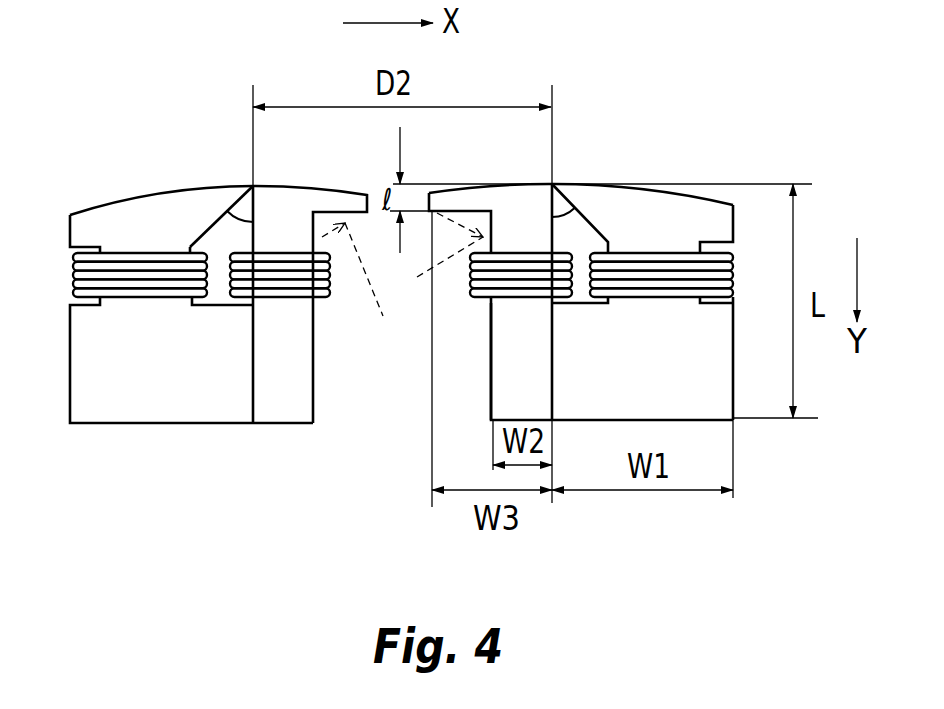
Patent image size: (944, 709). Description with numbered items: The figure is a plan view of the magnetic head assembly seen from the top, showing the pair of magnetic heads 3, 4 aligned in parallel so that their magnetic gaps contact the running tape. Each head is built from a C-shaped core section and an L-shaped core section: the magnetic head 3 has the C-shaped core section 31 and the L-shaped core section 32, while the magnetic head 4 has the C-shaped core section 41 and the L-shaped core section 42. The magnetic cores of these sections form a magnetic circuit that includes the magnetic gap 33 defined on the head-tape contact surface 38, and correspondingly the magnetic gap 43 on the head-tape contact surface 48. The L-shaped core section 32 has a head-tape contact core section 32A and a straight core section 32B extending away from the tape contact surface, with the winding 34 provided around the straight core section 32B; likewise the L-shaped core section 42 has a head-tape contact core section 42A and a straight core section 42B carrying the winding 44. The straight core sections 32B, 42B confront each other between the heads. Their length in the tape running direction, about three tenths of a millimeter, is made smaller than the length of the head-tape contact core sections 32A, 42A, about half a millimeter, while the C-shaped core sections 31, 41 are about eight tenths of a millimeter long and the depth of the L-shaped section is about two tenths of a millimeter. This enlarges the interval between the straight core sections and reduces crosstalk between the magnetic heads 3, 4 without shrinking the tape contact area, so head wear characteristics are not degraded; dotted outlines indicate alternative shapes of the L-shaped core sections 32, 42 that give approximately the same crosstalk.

The magnetic head 3 is at (678, 92).
The magnetic head 4 is at (153, 97).
The C-shaped core section 31 is at (716, 386).
The L-shaped core section 32 is at (523, 362).
The head-tape contact core section 32A is at (504, 195).
The straight core section 32B is at (428, 361).
The magnetic gap 33 is at (553, 183).
The winding 34 is at (440, 282).
The head-tape contact surface 38 is at (692, 194).
The C-shaped core section 41 is at (135, 406).
The L-shaped core section 42 is at (279, 405).
The head-tape contact core section 42A is at (291, 198).
The straight core section 42B is at (346, 374).
The magnetic gap 43 is at (251, 184).
The winding 44 is at (317, 296).
The head-tape contact surface 48 is at (112, 202).